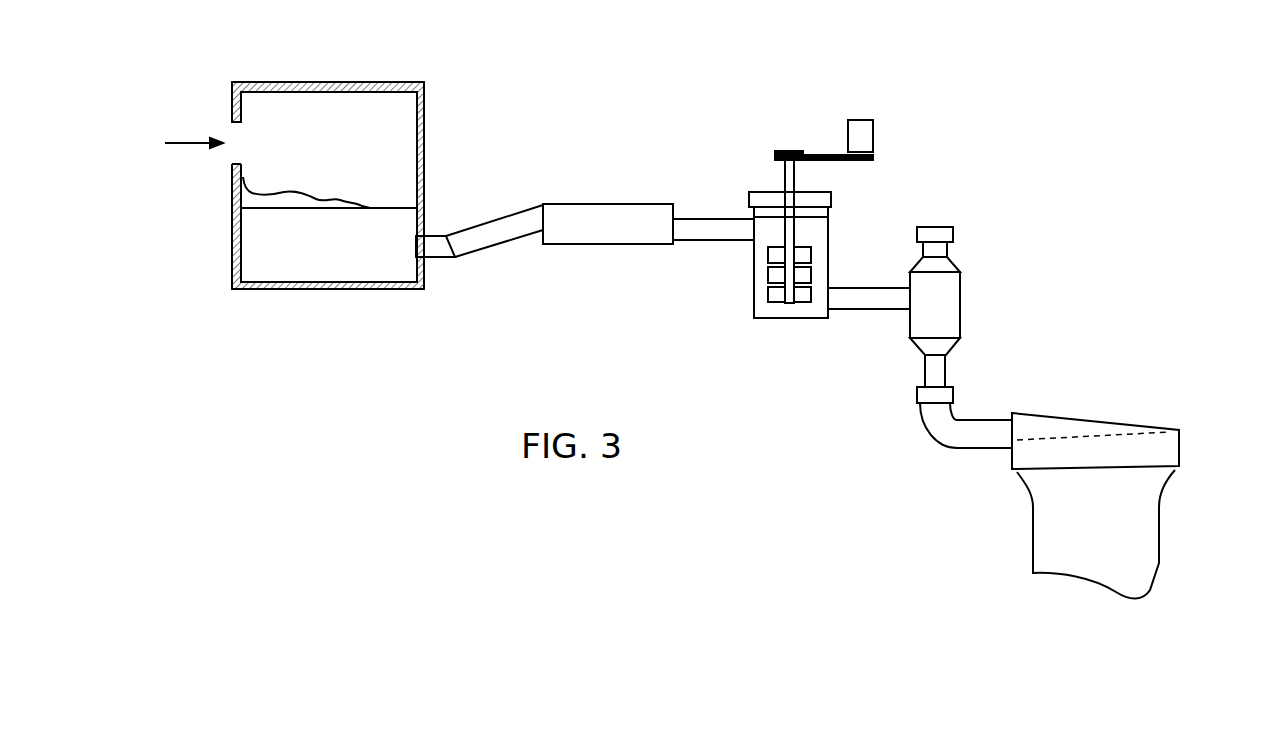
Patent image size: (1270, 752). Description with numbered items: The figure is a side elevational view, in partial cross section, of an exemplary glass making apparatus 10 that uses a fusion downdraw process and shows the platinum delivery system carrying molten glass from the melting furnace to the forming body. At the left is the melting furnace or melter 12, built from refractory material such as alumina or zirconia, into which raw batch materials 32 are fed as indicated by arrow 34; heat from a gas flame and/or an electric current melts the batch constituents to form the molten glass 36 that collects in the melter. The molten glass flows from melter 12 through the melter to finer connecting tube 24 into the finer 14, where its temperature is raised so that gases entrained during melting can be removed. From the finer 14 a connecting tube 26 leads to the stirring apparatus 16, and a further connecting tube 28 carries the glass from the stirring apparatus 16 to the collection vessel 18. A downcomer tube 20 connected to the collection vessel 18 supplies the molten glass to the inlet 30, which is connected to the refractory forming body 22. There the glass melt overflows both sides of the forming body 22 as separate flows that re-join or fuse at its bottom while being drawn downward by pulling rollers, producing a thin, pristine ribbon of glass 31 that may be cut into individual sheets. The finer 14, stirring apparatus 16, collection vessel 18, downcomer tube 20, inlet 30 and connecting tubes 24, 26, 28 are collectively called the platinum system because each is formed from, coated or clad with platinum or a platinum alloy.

The glass making apparatus 10 is at (719, 114).
The melting furnace 12 is at (341, 82).
The finer 14 is at (605, 204).
The stirring apparatus 16 is at (757, 305).
The collection vessel 18 is at (960, 305).
The downcomer tube 20 is at (927, 371).
The forming body 22 is at (1183, 450).
The melter to finer connecting tube 24 is at (521, 212).
The connecting tube 26 is at (705, 245).
The connecting tube 28 is at (867, 309).
The inlet 30 is at (969, 452).
The ribbon of glass 31 is at (1163, 543).
The raw batch materials 32 is at (280, 190).
The arrow 34 is at (192, 143).
The molten glass 36 is at (333, 251).